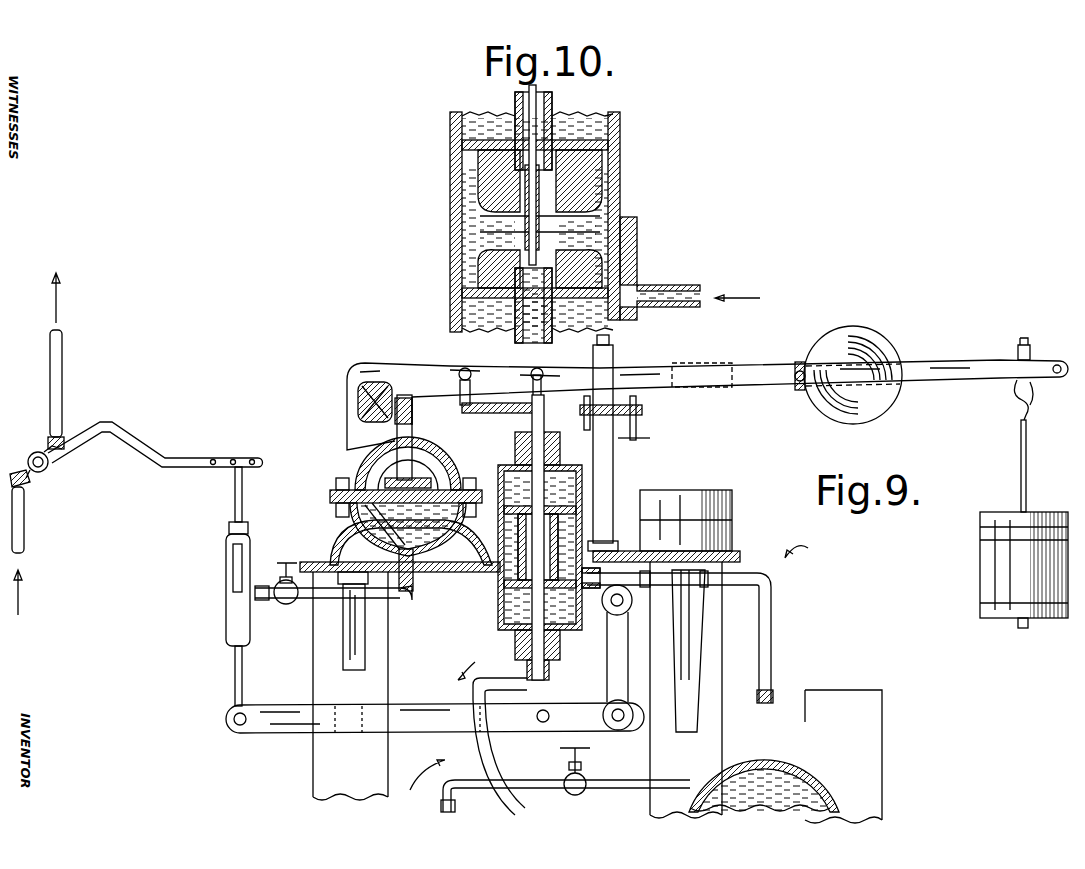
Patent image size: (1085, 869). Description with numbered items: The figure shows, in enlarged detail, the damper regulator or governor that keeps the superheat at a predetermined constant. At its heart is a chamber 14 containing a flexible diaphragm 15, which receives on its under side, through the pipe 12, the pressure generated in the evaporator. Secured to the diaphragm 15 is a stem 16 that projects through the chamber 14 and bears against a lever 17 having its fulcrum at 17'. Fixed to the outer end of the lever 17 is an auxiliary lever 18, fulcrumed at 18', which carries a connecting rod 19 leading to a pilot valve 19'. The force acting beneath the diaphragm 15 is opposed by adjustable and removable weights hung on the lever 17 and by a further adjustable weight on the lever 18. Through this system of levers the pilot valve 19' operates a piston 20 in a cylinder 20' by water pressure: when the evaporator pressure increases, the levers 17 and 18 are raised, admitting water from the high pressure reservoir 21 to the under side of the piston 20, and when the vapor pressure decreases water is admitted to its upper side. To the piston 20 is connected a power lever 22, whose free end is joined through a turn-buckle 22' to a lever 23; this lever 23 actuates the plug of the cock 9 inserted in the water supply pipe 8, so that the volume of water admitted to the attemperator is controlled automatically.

In FIG. 9, the water supply pipe 8 is at (58, 388).
In FIG. 9, the cock 9 is at (47, 467).
In FIG. 9, the pipe 12 is at (328, 591).
In FIG. 9, the chamber 14 is at (443, 471).
In FIG. 9, the flexible diaphragm 15 is at (352, 494).
In FIG. 9, the stem 16 is at (409, 426).
In FIG. 9, the lever 17 is at (707, 395).
In FIG. 9, the fulcrum 17' is at (349, 396).
In FIG. 9, the auxiliary lever 18 is at (692, 443).
In FIG. 9, the fulcrum 18' is at (501, 376).
In FIG. 10, the connecting rod 19 is at (504, 214).
In FIG. 9, the connecting rod 19 is at (549, 537).
In FIG. 10, the pilot valve 19' is at (565, 222).
In FIG. 9, the pilot valve 19' is at (527, 547).
In FIG. 10, the piston 20 is at (505, 274).
In FIG. 9, the piston 20 is at (521, 562).
In FIG. 10, the cylinder 20' is at (432, 222).
In FIG. 9, the cylinder 20' is at (562, 655).
In FIG. 9, the high pressure reservoir 21 is at (778, 702).
In FIG. 9, the power lever 22 is at (435, 703).
In FIG. 9, the turn-buckle 22' is at (216, 586).
In FIG. 9, the lever 23 is at (135, 446).